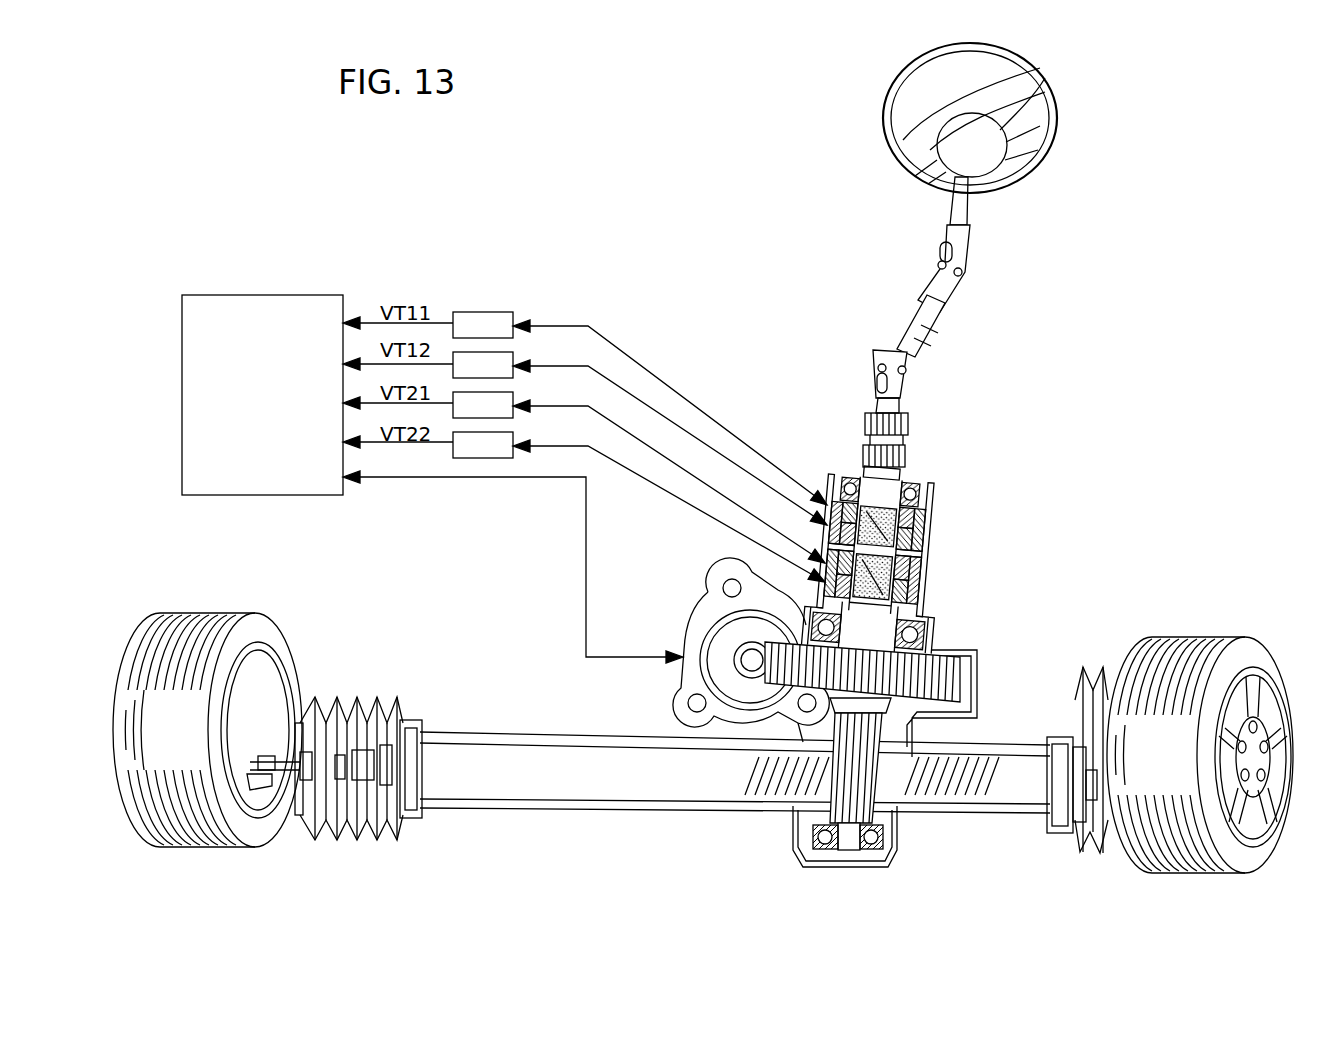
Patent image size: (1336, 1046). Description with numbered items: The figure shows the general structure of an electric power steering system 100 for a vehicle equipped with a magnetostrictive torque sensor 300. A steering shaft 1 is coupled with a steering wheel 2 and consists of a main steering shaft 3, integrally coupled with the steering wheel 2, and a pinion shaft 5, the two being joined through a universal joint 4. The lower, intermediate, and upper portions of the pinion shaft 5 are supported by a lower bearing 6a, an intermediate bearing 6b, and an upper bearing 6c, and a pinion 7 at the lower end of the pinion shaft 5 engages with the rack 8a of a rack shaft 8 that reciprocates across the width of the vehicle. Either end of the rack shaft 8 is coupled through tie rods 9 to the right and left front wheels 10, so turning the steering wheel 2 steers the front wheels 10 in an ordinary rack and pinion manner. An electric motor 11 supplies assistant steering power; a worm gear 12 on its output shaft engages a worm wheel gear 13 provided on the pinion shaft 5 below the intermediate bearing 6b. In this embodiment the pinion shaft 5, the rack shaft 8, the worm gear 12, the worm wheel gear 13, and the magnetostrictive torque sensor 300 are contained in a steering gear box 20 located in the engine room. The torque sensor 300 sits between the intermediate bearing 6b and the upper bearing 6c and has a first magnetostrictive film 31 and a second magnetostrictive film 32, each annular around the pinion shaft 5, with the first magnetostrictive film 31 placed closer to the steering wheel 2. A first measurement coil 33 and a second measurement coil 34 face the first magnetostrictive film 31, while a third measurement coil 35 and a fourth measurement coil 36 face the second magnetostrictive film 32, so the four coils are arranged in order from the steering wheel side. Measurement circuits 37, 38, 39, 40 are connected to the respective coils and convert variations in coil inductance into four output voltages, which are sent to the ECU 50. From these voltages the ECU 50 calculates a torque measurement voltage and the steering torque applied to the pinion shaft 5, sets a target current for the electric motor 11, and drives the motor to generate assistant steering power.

The electric power steering system 100 is at (1050, 191).
The steering wheel 2 is at (1053, 135).
The main steering shaft 3 is at (950, 207).
The steering shaft 1 is at (930, 253).
The universal joint 4 is at (925, 300).
The pinion shaft 5 is at (821, 581).
The lower bearing 6a is at (887, 855).
The intermediate bearing 6b is at (920, 633).
The upper bearing 6c is at (920, 488).
The pinion 7 is at (905, 826).
The rack shaft 8 is at (602, 805).
The rack 8a is at (775, 778).
The tie rods 9 is at (335, 703).
The front wheels 10 is at (208, 613).
The electric motor 11 is at (700, 617).
The worm gear 12 is at (742, 662).
The worm wheel gear 13 is at (962, 702).
The steering gear box 20 is at (962, 675).
The first magnetostrictive film 31 is at (920, 508).
The second magnetostrictive film 32 is at (912, 612).
The first measurement coil 33 is at (918, 522).
The second measurement coil 34 is at (918, 545).
The third measurement coil 35 is at (918, 580).
The fourth measurement coil 36 is at (918, 600).
The magnetostrictive torque sensor 300 is at (928, 565).
The measurement circuit 37 is at (515, 318).
The measurement circuit 38 is at (515, 358).
The measurement circuit 39 is at (515, 398).
The measurement circuit 40 is at (515, 438).
The electronic control unit (ECU) 50 is at (182, 335).